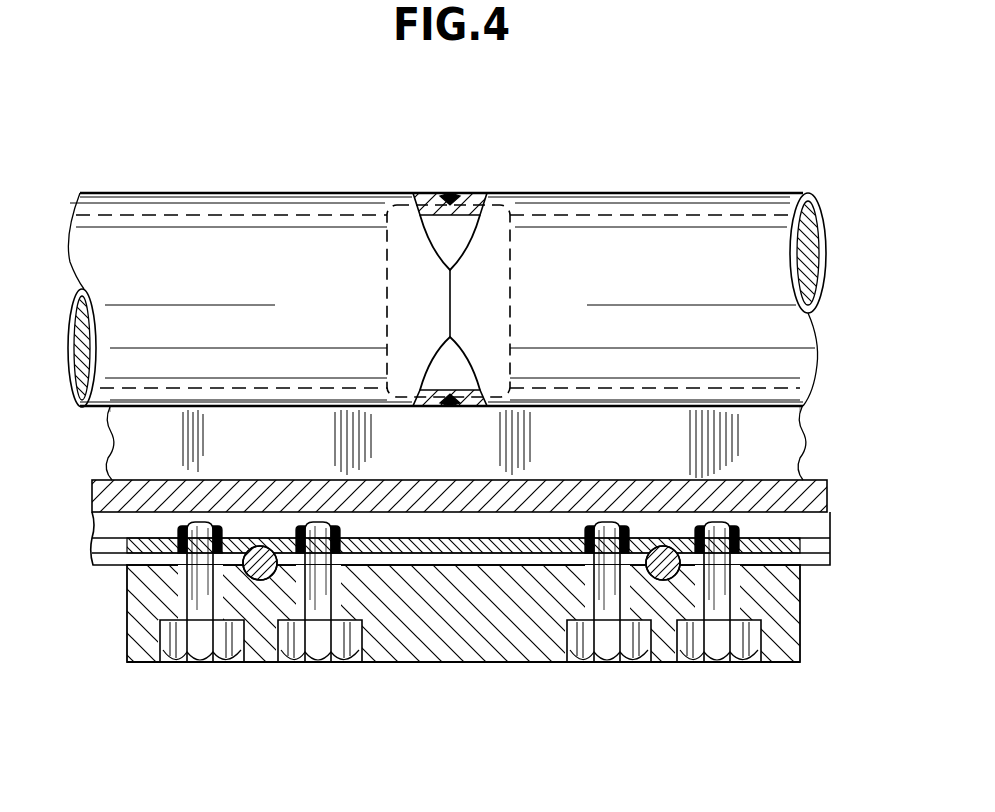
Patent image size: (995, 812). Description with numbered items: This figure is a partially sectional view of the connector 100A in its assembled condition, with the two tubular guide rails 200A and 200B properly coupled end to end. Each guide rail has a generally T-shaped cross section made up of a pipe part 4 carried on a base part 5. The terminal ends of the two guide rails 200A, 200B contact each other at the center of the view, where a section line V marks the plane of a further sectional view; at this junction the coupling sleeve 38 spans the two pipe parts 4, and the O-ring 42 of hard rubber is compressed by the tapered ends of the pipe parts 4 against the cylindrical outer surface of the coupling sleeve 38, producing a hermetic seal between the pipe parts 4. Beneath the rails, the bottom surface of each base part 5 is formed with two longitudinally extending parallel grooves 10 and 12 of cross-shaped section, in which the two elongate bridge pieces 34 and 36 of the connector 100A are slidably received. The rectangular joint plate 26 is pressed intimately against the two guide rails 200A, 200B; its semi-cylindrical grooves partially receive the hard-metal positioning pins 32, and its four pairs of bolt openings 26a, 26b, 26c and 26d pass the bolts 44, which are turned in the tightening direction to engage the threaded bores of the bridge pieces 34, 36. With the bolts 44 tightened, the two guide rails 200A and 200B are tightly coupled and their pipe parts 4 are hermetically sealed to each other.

The pipe part 4 is at (258, 193).
The tubular guide rail 200A is at (228, 160).
The tubular guide rail 200B is at (705, 160).
The section view indicator V is at (434, 174).
The O-ring 42 is at (458, 195).
The coupling sleeve 38 is at (515, 263).
The base part 5 is at (112, 440).
The groove 10 is at (461, 522).
The groove 12 is at (103, 525).
The bridge piece 34 is at (410, 577).
The bridge piece 36 is at (126, 549).
The joint plate 26 is at (453, 655).
The bolt opening 26a is at (237, 617).
The bolt opening 26c is at (192, 592).
The bolt opening 26b is at (690, 618).
The bolt opening 26d is at (584, 596).
The bolt 44 is at (203, 654).
The positioning pin 32 is at (262, 547).
The connector 100A is at (492, 700).